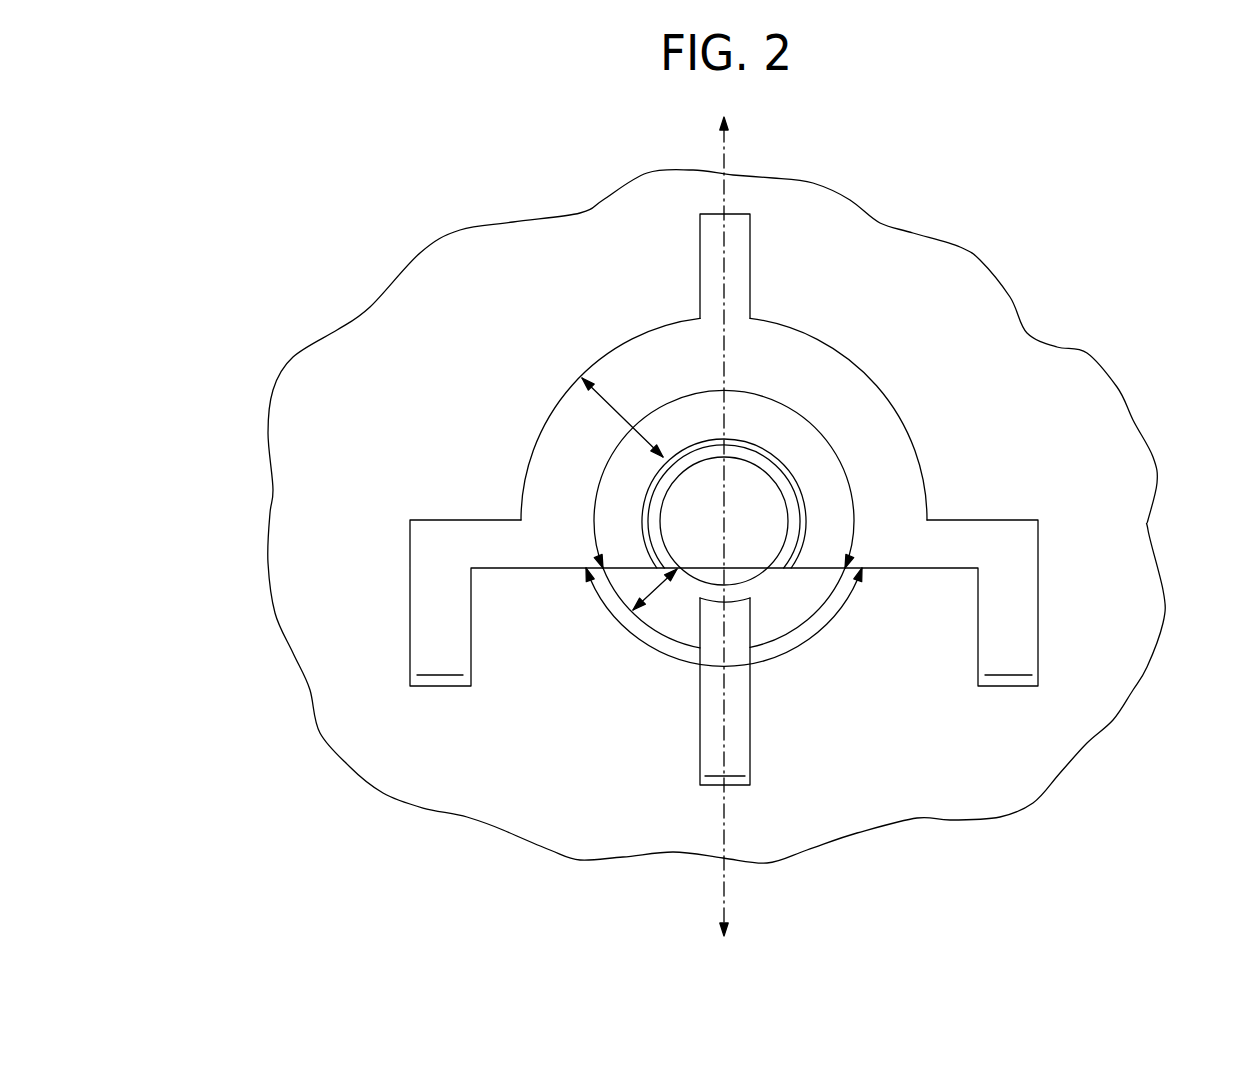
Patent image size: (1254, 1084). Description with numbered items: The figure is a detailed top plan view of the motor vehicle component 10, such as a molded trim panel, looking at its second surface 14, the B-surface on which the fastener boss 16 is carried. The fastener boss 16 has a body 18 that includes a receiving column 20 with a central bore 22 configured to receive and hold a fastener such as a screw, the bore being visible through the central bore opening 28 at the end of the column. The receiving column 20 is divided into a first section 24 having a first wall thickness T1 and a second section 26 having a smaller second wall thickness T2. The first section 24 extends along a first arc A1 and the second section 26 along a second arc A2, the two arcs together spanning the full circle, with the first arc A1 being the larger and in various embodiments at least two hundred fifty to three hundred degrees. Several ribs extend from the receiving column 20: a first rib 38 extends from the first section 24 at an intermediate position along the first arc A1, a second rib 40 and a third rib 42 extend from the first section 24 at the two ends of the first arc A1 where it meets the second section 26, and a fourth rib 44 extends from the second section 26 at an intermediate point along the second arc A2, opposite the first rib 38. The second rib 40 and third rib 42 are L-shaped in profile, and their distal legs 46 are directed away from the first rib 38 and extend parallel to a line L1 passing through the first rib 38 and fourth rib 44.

The motor vehicle component 10 is at (947, 195).
The second surface 14 is at (447, 287).
The fastener boss 16 is at (638, 255).
The body 18 is at (525, 473).
The receiving column 20 is at (853, 355).
The central bore 22 is at (753, 557).
The first section 24 is at (922, 467).
The second section 26 is at (672, 623).
The central bore opening 28 is at (790, 513).
The first rib 38 is at (750, 273).
The second rib 40 is at (438, 542).
The third rib 42 is at (1013, 547).
The fourth rib 44 is at (740, 738).
The distal legs 46 is at (410, 652).
The line L1 is at (727, 158).
The first wall thickness T1 is at (615, 412).
The second wall thickness T2 is at (643, 592).
The first arc A1 is at (833, 447).
The second arc A2 is at (793, 652).